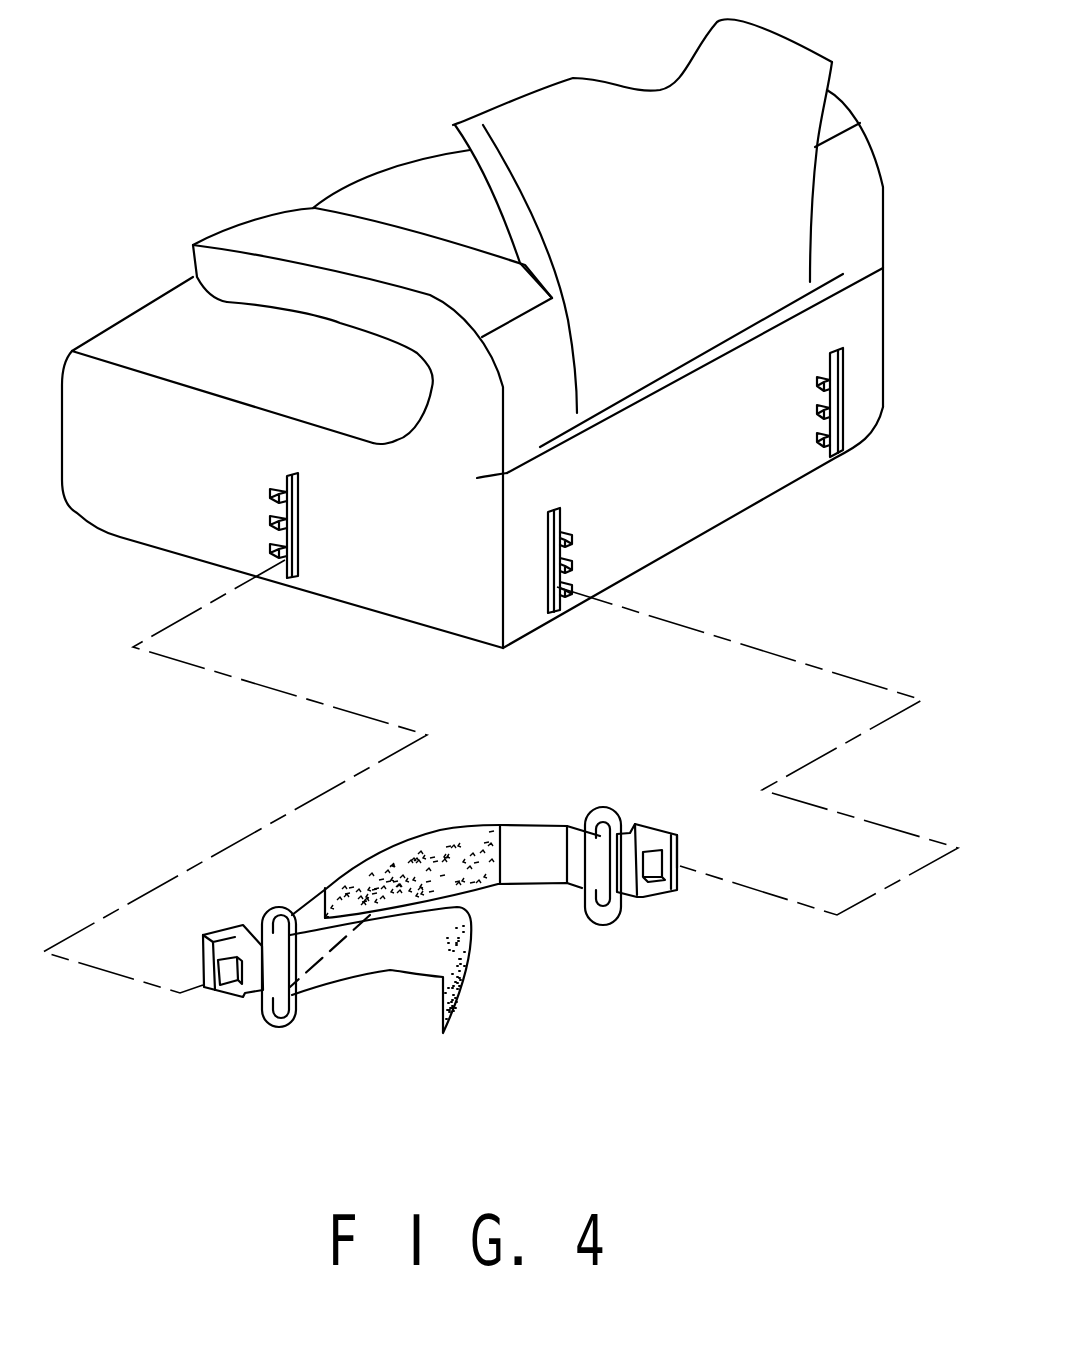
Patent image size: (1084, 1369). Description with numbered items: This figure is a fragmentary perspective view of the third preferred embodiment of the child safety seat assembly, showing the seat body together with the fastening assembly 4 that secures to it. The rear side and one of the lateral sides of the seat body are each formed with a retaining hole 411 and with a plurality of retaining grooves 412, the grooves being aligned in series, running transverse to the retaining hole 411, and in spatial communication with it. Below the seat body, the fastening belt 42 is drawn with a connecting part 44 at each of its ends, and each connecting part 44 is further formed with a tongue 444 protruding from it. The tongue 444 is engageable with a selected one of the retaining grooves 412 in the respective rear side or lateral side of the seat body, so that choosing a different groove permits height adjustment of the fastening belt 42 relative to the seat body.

The securing strap assembly 4 is at (500, 825).
The retaining hole 411 is at (833, 365).
The retaining grooves 412 is at (824, 383).
The fastening belt 42 is at (522, 852).
The connecting parts 44 is at (248, 990).
The tongue 444 is at (677, 868).